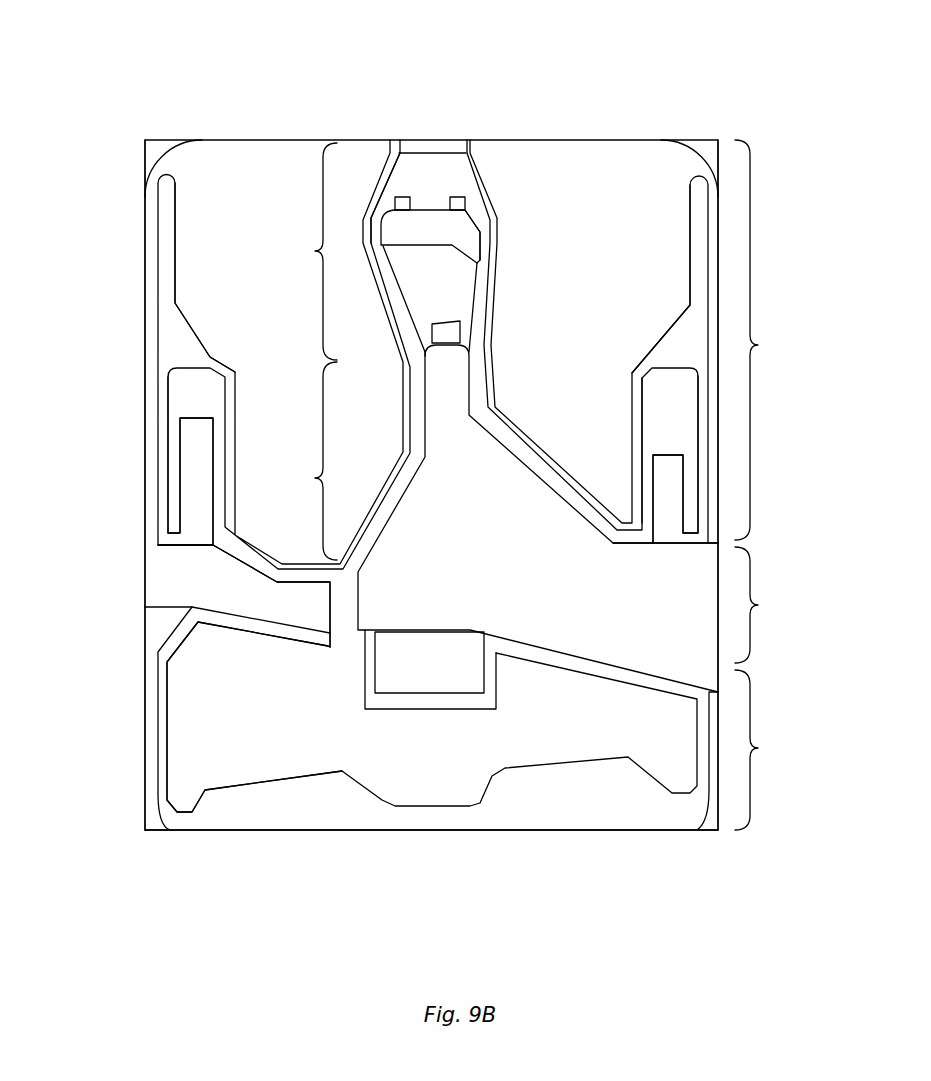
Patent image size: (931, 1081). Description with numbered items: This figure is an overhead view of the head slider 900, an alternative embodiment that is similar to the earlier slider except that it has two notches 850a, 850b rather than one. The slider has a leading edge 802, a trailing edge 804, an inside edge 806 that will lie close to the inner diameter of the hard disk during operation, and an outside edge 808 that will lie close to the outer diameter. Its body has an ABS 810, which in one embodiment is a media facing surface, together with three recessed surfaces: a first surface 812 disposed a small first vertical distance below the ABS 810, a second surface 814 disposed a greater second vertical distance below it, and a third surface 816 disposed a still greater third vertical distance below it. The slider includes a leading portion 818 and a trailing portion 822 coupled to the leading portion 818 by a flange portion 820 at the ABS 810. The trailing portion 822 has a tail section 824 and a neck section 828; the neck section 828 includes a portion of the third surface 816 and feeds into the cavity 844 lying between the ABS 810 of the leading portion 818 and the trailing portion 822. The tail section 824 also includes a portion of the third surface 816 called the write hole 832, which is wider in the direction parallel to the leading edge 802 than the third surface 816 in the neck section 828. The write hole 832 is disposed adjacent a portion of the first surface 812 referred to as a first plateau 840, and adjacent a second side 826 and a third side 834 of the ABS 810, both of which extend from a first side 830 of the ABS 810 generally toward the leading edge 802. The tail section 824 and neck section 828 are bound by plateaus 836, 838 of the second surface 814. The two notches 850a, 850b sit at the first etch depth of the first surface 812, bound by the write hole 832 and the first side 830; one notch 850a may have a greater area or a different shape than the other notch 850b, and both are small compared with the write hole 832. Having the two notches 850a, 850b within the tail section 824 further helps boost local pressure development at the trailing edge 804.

The head slider 900 is at (163, 38).
The leading edge 802 is at (633, 857).
The trailing edge 804 is at (638, 109).
The inside edge 806 is at (731, 228).
The outside edge 808 is at (135, 228).
The ABS 810 is at (437, 163).
The first surface 812 is at (452, 147).
The second surface 814 is at (247, 141).
The third surface 816 is at (398, 232).
The leading portion 818 is at (772, 750).
The flange portion 820 is at (772, 605).
The trailing portion 822 is at (772, 340).
The tail section 824 is at (303, 251).
The second side 826 is at (380, 218).
The neck section 828 is at (303, 461).
The first side 830 is at (412, 163).
The write hole 832 is at (462, 237).
The third side 834 is at (483, 220).
The plateau 836 is at (598, 280).
The plateau 838 is at (208, 280).
The first plateau 840 is at (448, 288).
The cavity 844 is at (458, 556).
The notch 850a is at (458, 197).
The notch 850b is at (402, 197).